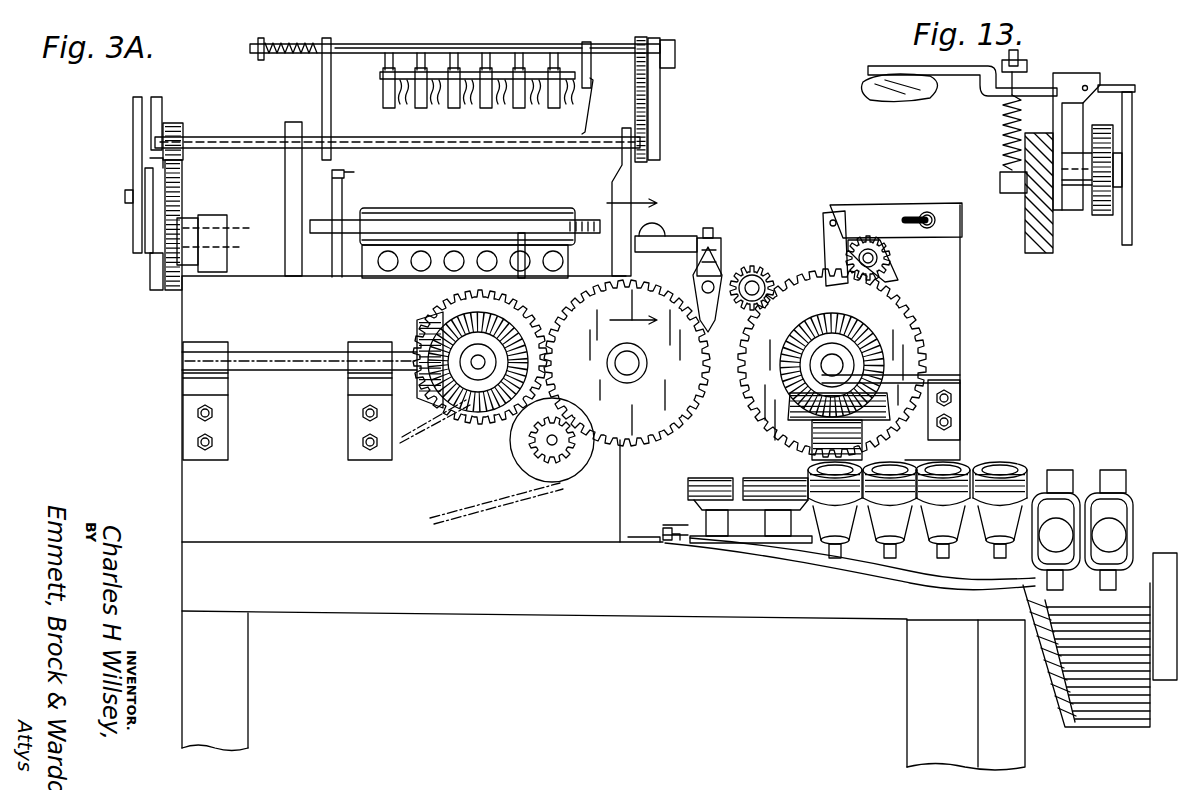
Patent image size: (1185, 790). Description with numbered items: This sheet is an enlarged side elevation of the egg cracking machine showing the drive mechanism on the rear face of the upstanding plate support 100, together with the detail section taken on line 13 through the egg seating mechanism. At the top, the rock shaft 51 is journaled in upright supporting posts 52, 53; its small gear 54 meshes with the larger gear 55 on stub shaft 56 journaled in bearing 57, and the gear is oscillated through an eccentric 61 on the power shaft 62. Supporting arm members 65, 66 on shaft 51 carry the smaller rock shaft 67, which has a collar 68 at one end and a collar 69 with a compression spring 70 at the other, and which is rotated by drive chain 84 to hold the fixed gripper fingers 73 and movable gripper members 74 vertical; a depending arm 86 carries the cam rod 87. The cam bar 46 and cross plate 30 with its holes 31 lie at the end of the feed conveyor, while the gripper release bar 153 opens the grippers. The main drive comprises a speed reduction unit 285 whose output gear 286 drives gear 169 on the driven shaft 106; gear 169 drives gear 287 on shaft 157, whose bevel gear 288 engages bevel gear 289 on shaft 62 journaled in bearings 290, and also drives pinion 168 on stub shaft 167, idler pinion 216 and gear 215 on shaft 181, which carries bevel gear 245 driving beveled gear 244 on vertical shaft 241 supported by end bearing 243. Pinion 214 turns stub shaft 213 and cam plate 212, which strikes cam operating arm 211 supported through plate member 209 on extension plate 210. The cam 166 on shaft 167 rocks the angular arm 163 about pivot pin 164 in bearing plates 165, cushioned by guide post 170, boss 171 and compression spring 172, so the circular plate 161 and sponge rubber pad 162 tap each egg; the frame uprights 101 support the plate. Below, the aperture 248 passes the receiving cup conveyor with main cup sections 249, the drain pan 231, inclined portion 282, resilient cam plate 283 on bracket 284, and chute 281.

In FIG. 3A, the upstanding plate support 100 is at (186, 475).
In FIG. 3A, the smaller rock shaft 67 is at (372, 44).
In FIG. 3A, the collar 69 is at (260, 38).
In FIG. 3A, the compression spring 70 is at (288, 42).
In FIG. 3A, the supporting arm member 65 is at (322, 84).
In FIG. 3A, the depending arm 86 is at (590, 68).
In FIG. 3A, the supporting arm member 66 is at (648, 84).
In FIG. 3A, the drive chain 84 is at (652, 107).
In FIG. 3A, the collar 68 is at (676, 48).
In FIG. 3A, the cam rod 87 is at (590, 112).
In FIG. 3A, the fixed gripper fingers 73 is at (462, 100).
In FIG. 3A, the movable gripper member 74 is at (425, 103).
In FIG. 3A, the rock shaft 51 is at (226, 137).
In FIG. 3A, the upright supporting post 52 is at (285, 182).
In FIG. 3A, the upright supporting post 53 is at (631, 184).
In FIG. 3A, the eccentric 61 is at (165, 357).
In FIG. 3A, the small gear 54 is at (175, 123).
In FIG. 3A, the larger gear 55 is at (182, 180).
In FIG. 3A, the stub shaft 56 is at (240, 229).
In FIG. 3A, the bearing 57 is at (228, 260).
In FIG. 3A, the cam bar 46 is at (503, 220).
In FIG. 3A, the gripper release bar 153 is at (396, 220).
In FIG. 3A, the cross plate 30 is at (365, 286).
In FIG. 3A, the holes 31 is at (455, 255).
In FIG. 3A, the section line 13 is at (618, 262).
In FIG. 3A, the gear 287 is at (530, 304).
In FIG. 3A, the bevel gear 289 is at (428, 324).
In FIG. 3A, the bevel gear 288 is at (435, 312).
In FIG. 3A, the driven shaft 106 is at (626, 378).
In FIG. 3A, the output gear 286 is at (548, 445).
In FIG. 3A, the speed reduction or control unit 285 is at (556, 478).
In FIG. 3A, the shaft 157 is at (460, 422).
In FIG. 3A, the power shaft 62 is at (292, 370).
In FIG. 3A, the bearings 290 is at (348, 428).
In FIG. 3A, the bevel gear 245 is at (800, 332).
In FIG. 3A, the shaft 181 is at (838, 350).
In FIG. 3A, the vertical shaft 241 is at (800, 432).
In FIG. 3A, the beveled gear 244 is at (905, 422).
In FIG. 3A, the upstanding extension plate 210 is at (945, 281).
In FIG. 3A, the plate member 209 is at (856, 217).
In FIG. 3A, the cam operating arm 211 is at (828, 254).
In FIG. 3A, the stub shaft 213 is at (880, 264).
In FIG. 3A, the cam plate 212 is at (898, 282).
In FIG. 3A, the pinion 214 is at (890, 252).
In FIG. 3A, the gear 215 is at (905, 307).
In FIG. 3A, the idler pinion 216 is at (815, 246).
In FIG. 3A, the gear 169 is at (706, 347).
In FIG. 3A, the driving pinion 168 is at (745, 307).
In FIG. 13, the driving pinion 168 is at (1100, 214).
In FIG. 3A, the angular arm 163 is at (680, 236).
In FIG. 13, the angular arm 163 is at (985, 93).
In FIG. 3A, the bearing plates 165 is at (718, 246).
In FIG. 13, the bearing plates 165 is at (1092, 76).
In FIG. 3A, the rotatable cam 166 is at (730, 260).
In FIG. 13, the rotatable cam 166 is at (1132, 116).
In FIG. 3A, the stub shaft 167 is at (748, 272).
In FIG. 13, the stub shaft 167 is at (1113, 150).
In FIG. 3A, the aperture 248 is at (630, 468).
In FIG. 3A, the drain pan 231 is at (640, 522).
In FIG. 3A, the end bearing 243 is at (860, 542).
In FIG. 3A, the main cup sections 249 is at (1094, 520).
In FIG. 3A, the upwardly inclined portion 282 is at (932, 585).
In FIG. 3A, the resilient cam plate 283 is at (672, 542).
In FIG. 3A, the bracket 284 is at (645, 547).
In FIG. 3A, the second pan or chute 281 is at (1100, 724).
In FIG. 13, the circular plate 161 is at (866, 76).
In FIG. 13, the sponge rubber pad 162 is at (895, 98).
In FIG. 13, the guide post 170 is at (1020, 70).
In FIG. 13, the compression spring 172 is at (1000, 121).
In FIG. 13, the boss 171 is at (1000, 178).
In FIG. 13, the uprights 101 is at (1025, 222).
In FIG. 13, the pivot pin 164 is at (1088, 89).